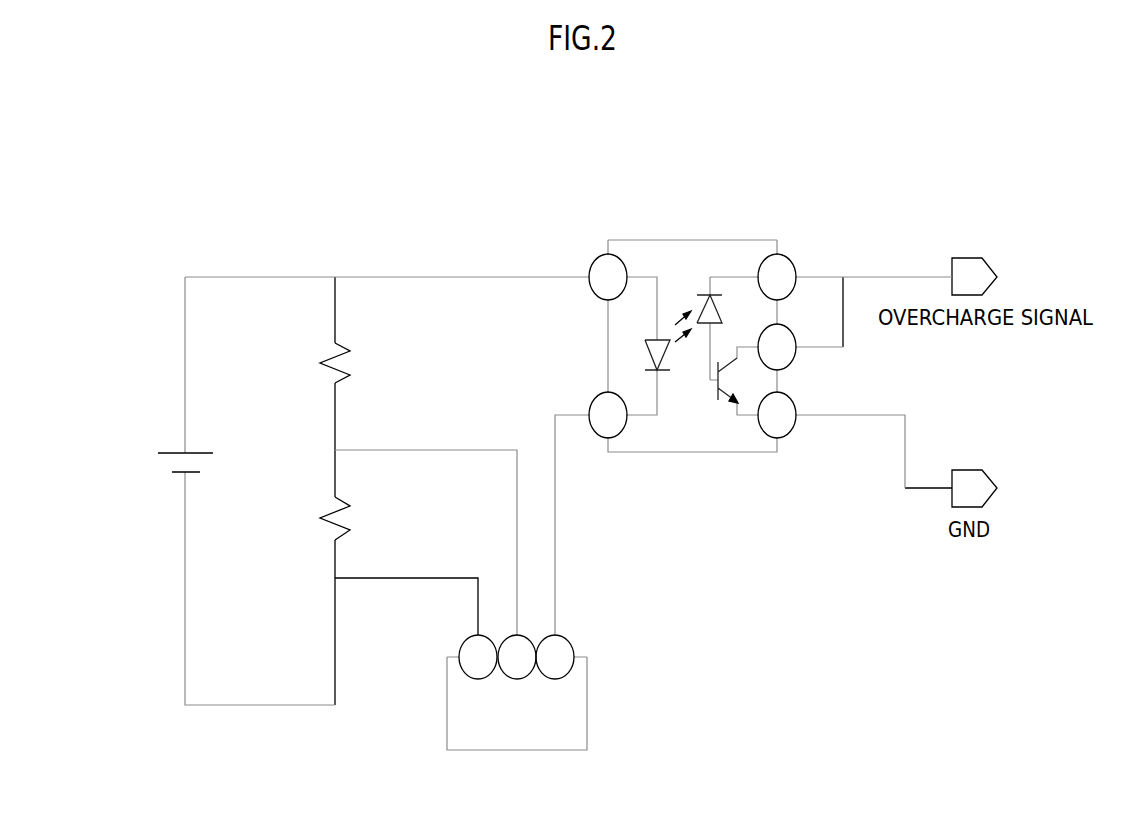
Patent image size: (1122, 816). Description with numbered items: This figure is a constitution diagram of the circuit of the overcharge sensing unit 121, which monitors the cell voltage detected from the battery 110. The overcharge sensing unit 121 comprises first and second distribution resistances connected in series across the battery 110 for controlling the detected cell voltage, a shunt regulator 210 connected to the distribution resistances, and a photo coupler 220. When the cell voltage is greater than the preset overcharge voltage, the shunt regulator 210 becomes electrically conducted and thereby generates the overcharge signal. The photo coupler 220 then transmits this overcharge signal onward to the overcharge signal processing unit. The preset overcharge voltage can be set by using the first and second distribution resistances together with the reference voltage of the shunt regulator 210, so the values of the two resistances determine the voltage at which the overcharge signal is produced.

The battery 110 is at (172, 452).
The overcharge sensing unit 121 is at (345, 183).
The shunt regulator 210 is at (592, 653).
The photo coupler 220 is at (779, 238).